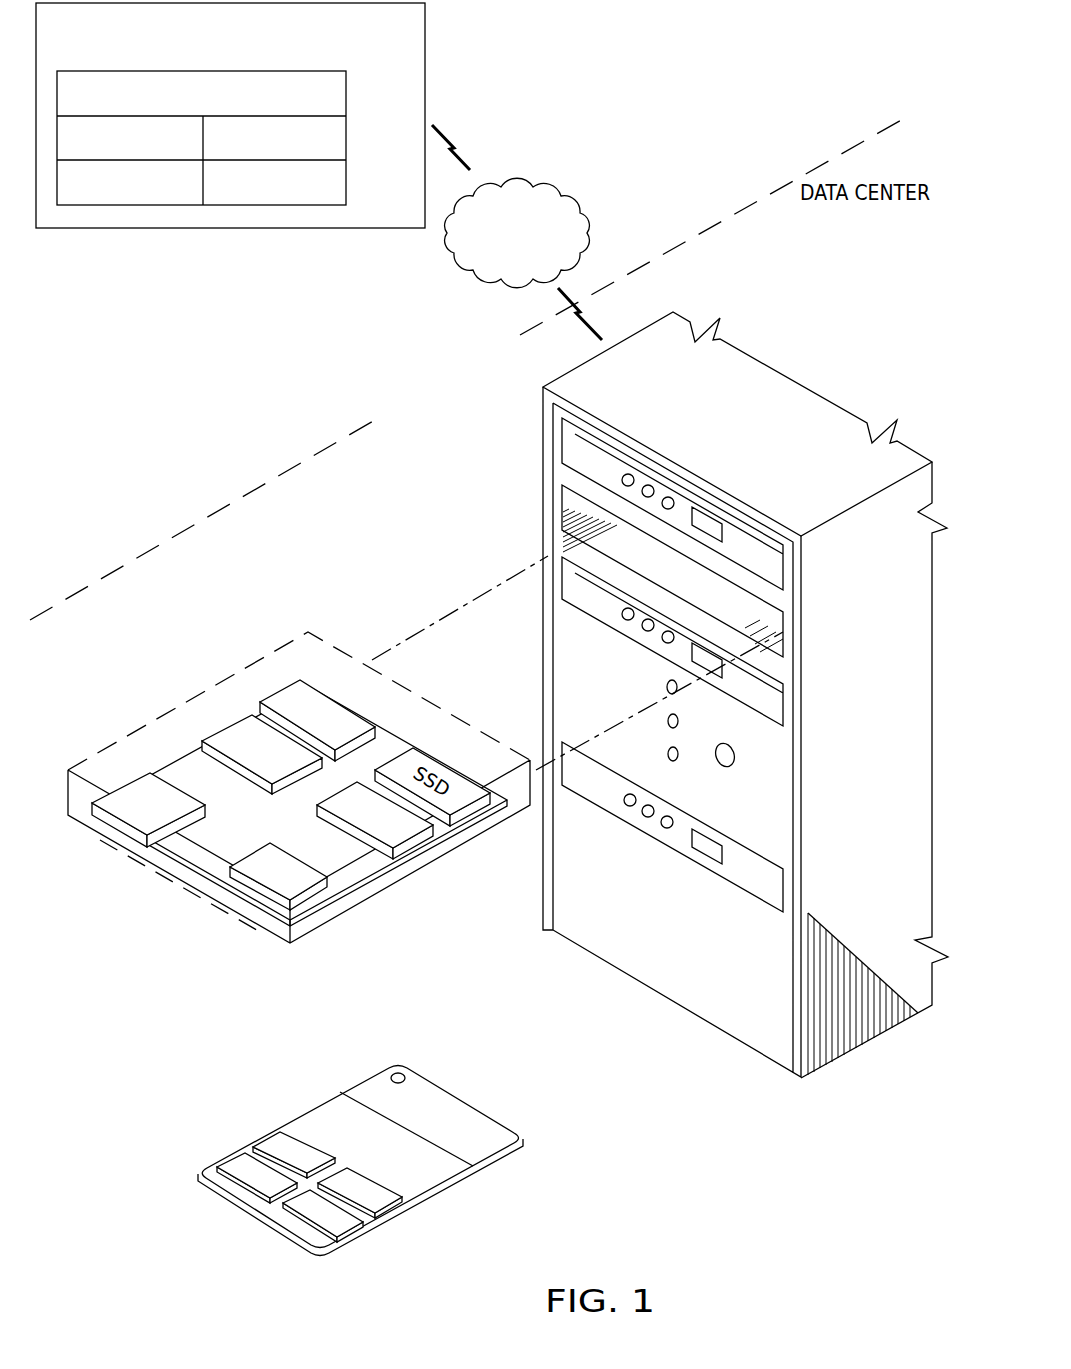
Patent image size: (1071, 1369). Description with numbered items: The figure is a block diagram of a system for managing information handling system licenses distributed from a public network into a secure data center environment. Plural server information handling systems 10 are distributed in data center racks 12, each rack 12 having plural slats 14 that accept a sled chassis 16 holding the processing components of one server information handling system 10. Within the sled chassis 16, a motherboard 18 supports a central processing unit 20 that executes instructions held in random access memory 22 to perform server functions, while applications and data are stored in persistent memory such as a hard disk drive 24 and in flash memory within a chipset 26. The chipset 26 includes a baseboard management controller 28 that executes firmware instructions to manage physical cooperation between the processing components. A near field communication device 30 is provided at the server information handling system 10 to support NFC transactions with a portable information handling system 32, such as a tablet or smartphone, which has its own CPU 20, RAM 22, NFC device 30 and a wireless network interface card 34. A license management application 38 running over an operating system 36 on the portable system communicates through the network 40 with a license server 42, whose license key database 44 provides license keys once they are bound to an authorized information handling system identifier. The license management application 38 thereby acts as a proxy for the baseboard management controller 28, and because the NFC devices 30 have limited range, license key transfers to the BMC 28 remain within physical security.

The server information handling system 10 is at (481, 432).
The data center rack 12 is at (815, 390).
The slats 14 is at (531, 510).
The sled chassis 16 is at (190, 696).
The motherboard 18 is at (337, 697).
The central processing unit 20 is at (233, 728).
The random access memory 22 is at (430, 856).
The hard disk drive 24 is at (290, 697).
The chipset 26 is at (372, 886).
The baseboard management controller 28 is at (130, 783).
The near field communication device 30 is at (310, 892).
The portable information handling system 32 is at (253, 1226).
The wireless network interface card 34 is at (360, 1238).
The operating system 36 is at (317, 1102).
The license management application 38 is at (457, 1105).
The network 40 is at (550, 182).
The license server 42 is at (431, 91).
The license key database 44 is at (346, 95).